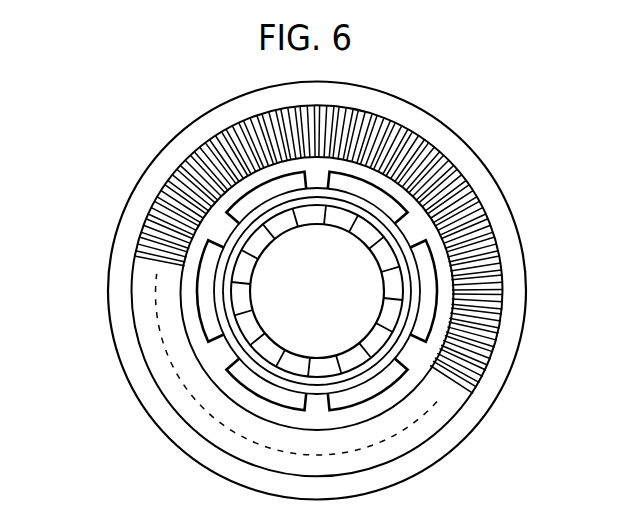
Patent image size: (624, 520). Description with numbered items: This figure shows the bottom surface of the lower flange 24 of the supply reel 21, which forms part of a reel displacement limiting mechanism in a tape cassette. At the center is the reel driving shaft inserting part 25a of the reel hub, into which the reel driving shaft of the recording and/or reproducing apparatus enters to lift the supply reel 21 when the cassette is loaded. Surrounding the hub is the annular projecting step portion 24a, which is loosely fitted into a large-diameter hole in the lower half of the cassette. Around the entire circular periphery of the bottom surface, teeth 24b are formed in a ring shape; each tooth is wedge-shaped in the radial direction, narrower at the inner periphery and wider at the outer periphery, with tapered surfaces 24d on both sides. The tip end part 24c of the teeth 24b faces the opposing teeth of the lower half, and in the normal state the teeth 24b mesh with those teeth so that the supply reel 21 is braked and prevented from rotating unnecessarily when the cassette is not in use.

The supply reel 21 is at (226, 85).
The lower flange 24 is at (149, 167).
The annular projecting step portion 24a is at (183, 270).
The teeth 24b is at (361, 118).
The tip end part 24c is at (366, 113).
The tapered surfaces 24d is at (402, 138).
The reel driving shaft inserting part 25a is at (277, 342).